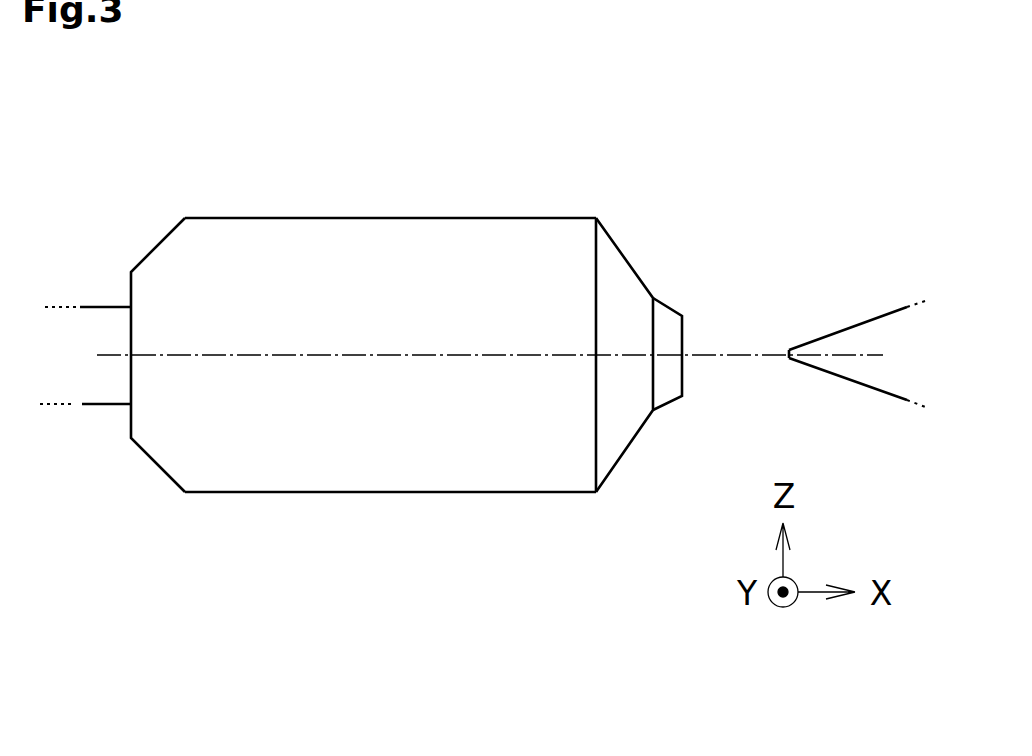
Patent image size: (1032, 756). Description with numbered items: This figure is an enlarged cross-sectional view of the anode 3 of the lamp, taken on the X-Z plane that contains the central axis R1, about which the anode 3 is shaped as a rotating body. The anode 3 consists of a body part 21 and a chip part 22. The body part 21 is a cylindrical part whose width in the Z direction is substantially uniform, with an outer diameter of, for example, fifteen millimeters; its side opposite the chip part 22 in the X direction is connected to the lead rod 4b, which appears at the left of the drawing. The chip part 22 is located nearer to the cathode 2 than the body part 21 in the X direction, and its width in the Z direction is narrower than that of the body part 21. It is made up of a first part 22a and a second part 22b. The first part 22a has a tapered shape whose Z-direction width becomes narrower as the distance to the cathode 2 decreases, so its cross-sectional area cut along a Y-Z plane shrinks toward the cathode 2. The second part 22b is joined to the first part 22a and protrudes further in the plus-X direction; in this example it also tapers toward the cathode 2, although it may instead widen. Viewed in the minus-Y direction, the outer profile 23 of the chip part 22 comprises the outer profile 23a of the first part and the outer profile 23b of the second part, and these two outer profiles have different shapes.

The cathode 2 is at (862, 332).
The anode 3 is at (424, 362).
The lead rod 4b is at (96, 323).
The body part 21 is at (420, 245).
The chip part 22 is at (636, 226).
The first part 22a is at (617, 275).
The second part 22b is at (668, 323).
The outer profile of the chip part 23 is at (636, 491).
The outer profile of the first part 23a is at (620, 457).
The outer profile of the second part 23b is at (667, 403).
The central axis R1 is at (460, 356).